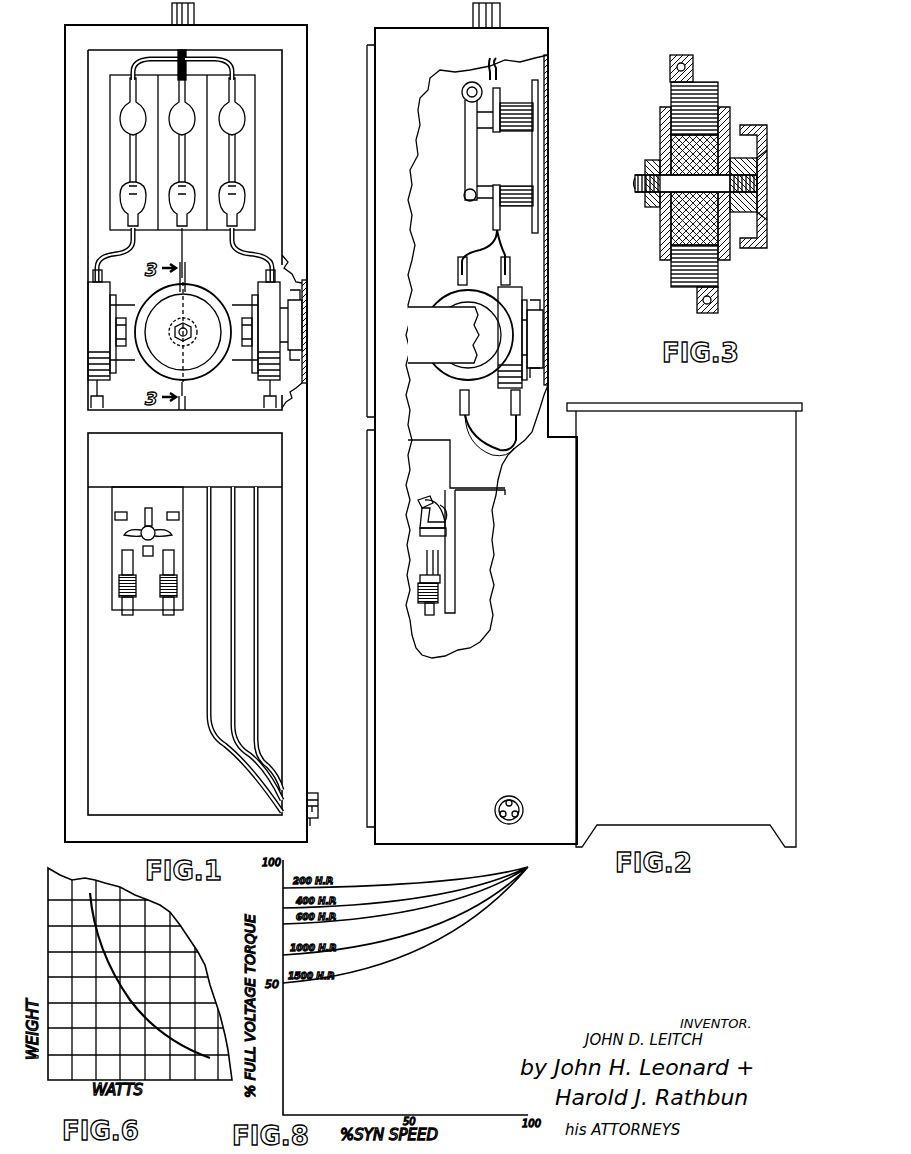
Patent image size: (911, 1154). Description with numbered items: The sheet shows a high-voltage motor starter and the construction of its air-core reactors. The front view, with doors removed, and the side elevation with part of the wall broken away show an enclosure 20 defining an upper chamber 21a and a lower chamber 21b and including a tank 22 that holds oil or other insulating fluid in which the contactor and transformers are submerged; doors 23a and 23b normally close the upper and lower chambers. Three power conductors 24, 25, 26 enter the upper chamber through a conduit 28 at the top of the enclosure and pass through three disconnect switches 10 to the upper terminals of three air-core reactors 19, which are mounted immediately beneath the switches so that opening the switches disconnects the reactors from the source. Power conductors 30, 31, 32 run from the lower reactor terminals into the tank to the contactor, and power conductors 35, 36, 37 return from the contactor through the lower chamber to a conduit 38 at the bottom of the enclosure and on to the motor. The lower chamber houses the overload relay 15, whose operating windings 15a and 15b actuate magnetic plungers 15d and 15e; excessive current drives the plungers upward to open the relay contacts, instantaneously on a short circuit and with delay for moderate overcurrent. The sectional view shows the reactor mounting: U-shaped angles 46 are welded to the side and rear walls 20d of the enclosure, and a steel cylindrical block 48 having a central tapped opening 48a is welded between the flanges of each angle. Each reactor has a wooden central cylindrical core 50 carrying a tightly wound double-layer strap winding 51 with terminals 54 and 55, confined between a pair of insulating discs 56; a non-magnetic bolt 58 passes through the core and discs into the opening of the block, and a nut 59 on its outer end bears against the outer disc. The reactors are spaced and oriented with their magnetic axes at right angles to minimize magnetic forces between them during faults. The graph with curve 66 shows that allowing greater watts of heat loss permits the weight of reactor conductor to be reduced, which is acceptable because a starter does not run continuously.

In FIG. 1, the enclosure 20 is at (68, 82).
In FIG. 1, the side and rear walls 20d is at (307, 296).
In FIG. 2, the side and rear walls 20d is at (548, 205).
In FIG. 1, the upper chamber 21a is at (95, 200).
In FIG. 2, the upper chamber 21a is at (430, 118).
In FIG. 1, the lower chamber 21b is at (100, 500).
In FIG. 2, the lower chamber 21b is at (425, 470).
In FIG. 2, the tank 22 is at (610, 428).
In FIG. 2, the door 23a is at (370, 88).
In FIG. 2, the door 23b is at (370, 528).
In FIG. 1, the power conductor 24 is at (138, 62).
In FIG. 1, the power conductor 25 is at (178, 55).
In FIG. 1, the power conductor 26 is at (225, 60).
In FIG. 2, the power conductor 26 is at (500, 62).
In FIG. 1, the conduit 28 is at (196, 20).
In FIG. 2, the conduit 28 is at (473, 17).
In FIG. 1, the disconnect switches 10 is at (226, 133).
In FIG. 2, the disconnect switches 10 is at (500, 156).
In FIG. 1, the air-core reactor 19 is at (97, 302).
In FIG. 2, the air-core reactor 19 is at (468, 300).
In FIG. 3, the air-core reactor 19 is at (660, 120).
In FIG. 1, the power conductor 30 is at (96, 403).
In FIG. 1, the power conductor 31 is at (188, 408).
In FIG. 2, the power conductor 31 is at (518, 425).
In FIG. 1, the power conductor 32 is at (263, 402).
In FIG. 2, the power conductor 32 is at (498, 456).
In FIG. 1, the overload relay 15 is at (112, 566).
In FIG. 2, the overload relay 15 is at (427, 527).
In FIG. 1, the operating winding 15a is at (126, 590).
In FIG. 1, the operating winding 15b is at (166, 590).
In FIG. 2, the operating winding 15b is at (424, 604).
In FIG. 1, the magnetic plunger 15d is at (120, 553).
In FIG. 1, the magnetic plunger 15e is at (172, 552).
In FIG. 1, the power conductor 35 is at (205, 716).
In FIG. 1, the power conductor 36 is at (230, 730).
In FIG. 1, the power conductor 37 is at (255, 776).
In FIG. 1, the conduit 38 is at (312, 826).
In FIG. 2, the conduit 38 is at (524, 810).
In FIG. 1, the U-shaped angle 46 is at (297, 362).
In FIG. 2, the U-shaped angle 46 is at (548, 298).
In FIG. 3, the U-shaped angle 46 is at (768, 128).
In FIG. 1, the cylindrical block 48 is at (295, 338).
In FIG. 2, the cylindrical block 48 is at (540, 340).
In FIG. 3, the cylindrical block 48 is at (768, 165).
In FIG. 3, the central tapped opening 48a is at (767, 195).
In FIG. 3, the central cylindrical core 50 is at (671, 145).
In FIG. 3, the double-layer strap winding 51 is at (671, 270).
In FIG. 3, the terminal 54 is at (670, 66).
In FIG. 3, the terminal 55 is at (697, 300).
In FIG. 3, the insulating disc 56 is at (660, 235).
In FIG. 3, the non-magnetic bolt 58 is at (640, 178).
In FIG. 3, the nut 59 is at (647, 205).
In FIG. 6, the curve 66 is at (125, 992).